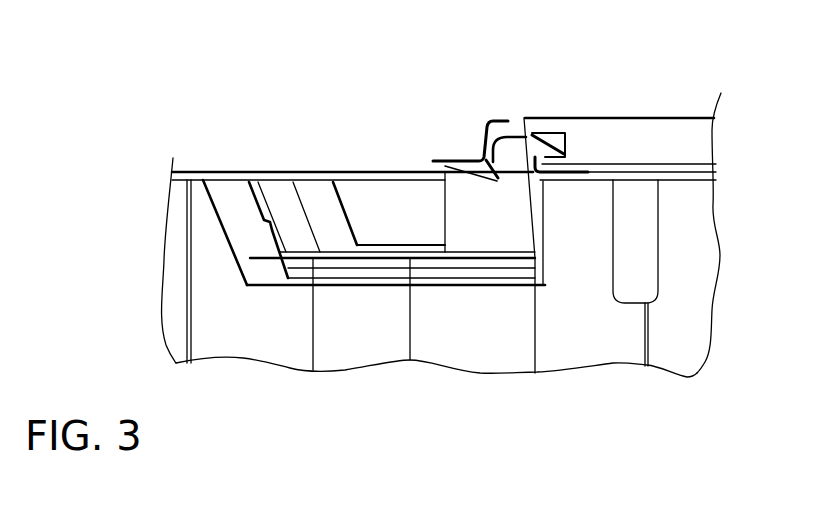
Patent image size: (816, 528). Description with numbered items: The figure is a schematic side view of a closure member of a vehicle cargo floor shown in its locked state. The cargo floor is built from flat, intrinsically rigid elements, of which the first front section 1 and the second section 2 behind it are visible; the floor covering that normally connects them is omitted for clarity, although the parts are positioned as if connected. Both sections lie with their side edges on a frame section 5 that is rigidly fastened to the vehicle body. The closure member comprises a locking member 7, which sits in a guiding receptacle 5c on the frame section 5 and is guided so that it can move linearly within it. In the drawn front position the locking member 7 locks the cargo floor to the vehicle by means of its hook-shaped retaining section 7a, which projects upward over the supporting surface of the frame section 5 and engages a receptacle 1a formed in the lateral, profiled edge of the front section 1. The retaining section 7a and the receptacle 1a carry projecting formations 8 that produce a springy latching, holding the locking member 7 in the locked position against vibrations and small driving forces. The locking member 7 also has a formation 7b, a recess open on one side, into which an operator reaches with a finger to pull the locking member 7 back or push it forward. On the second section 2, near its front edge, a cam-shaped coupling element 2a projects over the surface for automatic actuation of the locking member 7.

The first front section 1 is at (662, 126).
The receptacle 1a is at (557, 142).
The second section 2 is at (488, 135).
The coupling element 2a is at (487, 173).
The frame section 5 is at (160, 204).
The guiding receptacle 5c is at (247, 266).
The locking member 7 is at (354, 191).
The retaining section 7a is at (517, 142).
The formation 7b is at (392, 195).
The projecting formations 8 is at (571, 191).